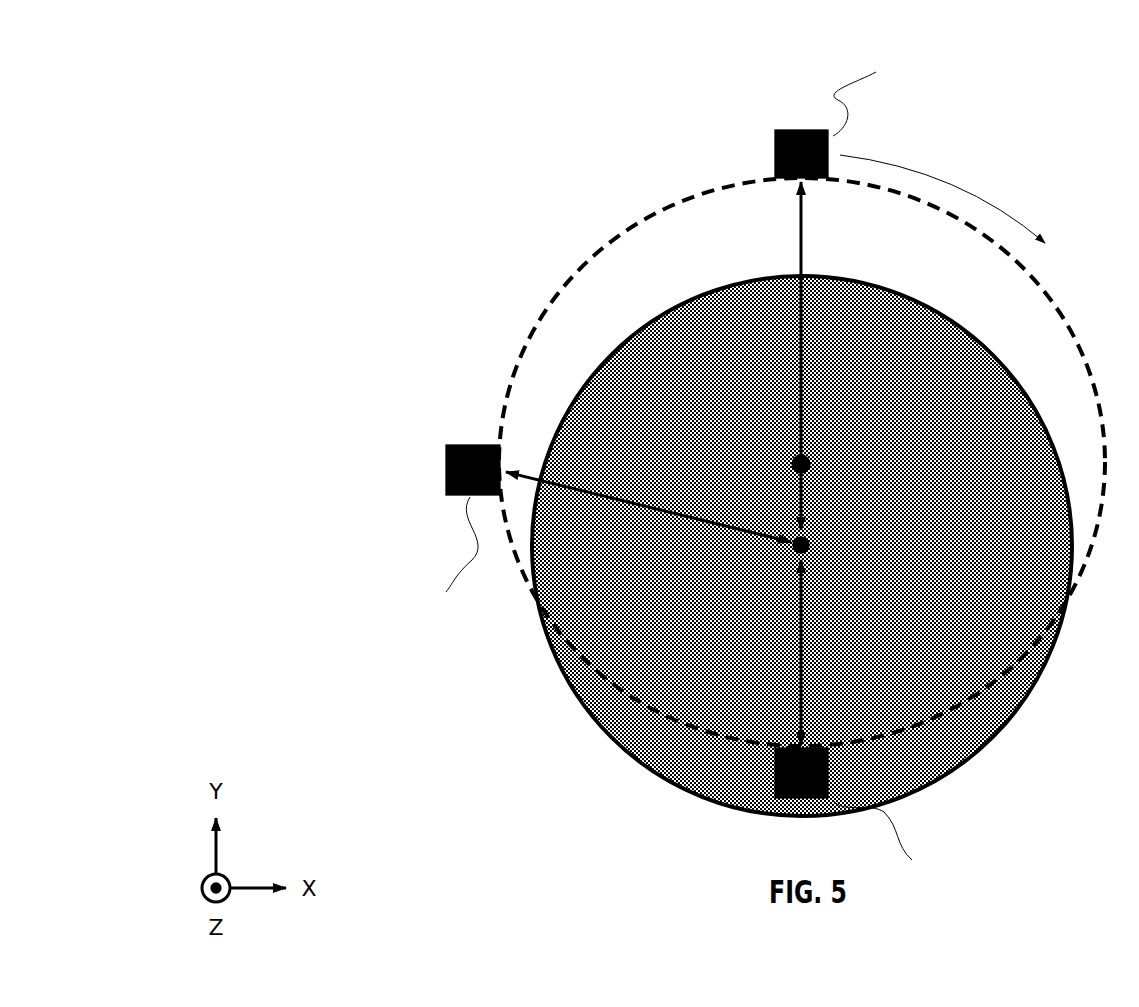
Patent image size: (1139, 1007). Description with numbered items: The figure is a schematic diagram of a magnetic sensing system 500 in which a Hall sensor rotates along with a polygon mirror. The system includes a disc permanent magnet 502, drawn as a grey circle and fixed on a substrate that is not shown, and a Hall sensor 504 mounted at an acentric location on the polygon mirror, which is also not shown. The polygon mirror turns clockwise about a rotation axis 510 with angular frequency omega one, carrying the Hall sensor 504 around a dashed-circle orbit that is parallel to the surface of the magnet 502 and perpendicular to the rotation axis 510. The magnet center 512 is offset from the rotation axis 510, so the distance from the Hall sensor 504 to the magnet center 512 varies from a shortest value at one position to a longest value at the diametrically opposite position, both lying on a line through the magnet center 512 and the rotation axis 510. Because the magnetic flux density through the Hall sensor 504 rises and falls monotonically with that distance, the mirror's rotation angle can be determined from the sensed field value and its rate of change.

The magnetic sensing system 500 is at (732, 38).
The disc permanent magnet 502 is at (802, 546).
The Hall sensor 504 is at (773, 142).
The rotation axis 510 is at (816, 464).
The magnet center 512 is at (816, 546).